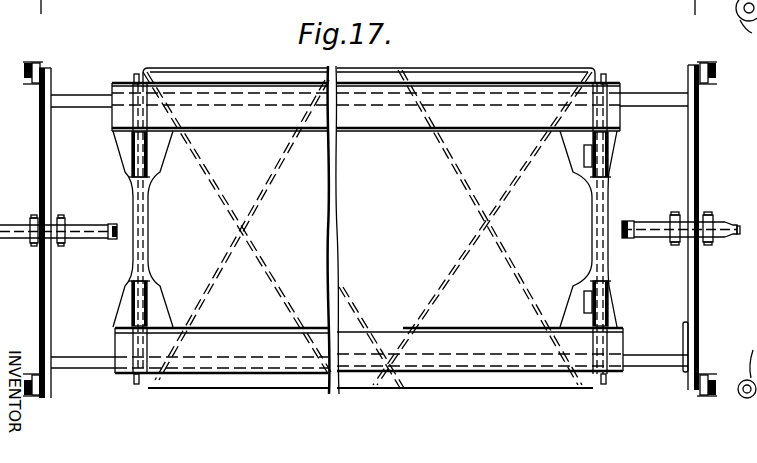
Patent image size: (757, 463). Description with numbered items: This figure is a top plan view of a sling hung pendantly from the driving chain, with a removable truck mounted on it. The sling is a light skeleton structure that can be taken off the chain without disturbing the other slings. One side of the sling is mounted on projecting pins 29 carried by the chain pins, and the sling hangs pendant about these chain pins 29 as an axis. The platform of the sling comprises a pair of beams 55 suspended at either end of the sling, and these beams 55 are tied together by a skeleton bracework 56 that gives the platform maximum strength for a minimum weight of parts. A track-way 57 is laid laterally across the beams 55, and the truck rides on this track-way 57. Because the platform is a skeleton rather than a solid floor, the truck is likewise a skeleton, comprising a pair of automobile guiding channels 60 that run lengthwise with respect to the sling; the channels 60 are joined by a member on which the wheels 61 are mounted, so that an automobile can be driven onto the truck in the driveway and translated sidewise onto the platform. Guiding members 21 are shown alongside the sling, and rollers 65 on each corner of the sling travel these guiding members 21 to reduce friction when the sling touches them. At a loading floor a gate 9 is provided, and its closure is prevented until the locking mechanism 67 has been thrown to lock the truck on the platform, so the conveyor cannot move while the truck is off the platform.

The gate 9 is at (15, 236).
The guiding member 21 is at (37, 62).
The projecting pin 29 is at (727, 232).
The beam 55 is at (102, 0).
The skeleton bracework 56 is at (262, 252).
The track-way 57 is at (151, 250).
The automobile guiding channel 60 is at (615, 118).
The wheel 61 is at (132, 156).
The roller 65 is at (33, 83).
The locking mechanism 67 is at (745, 405).